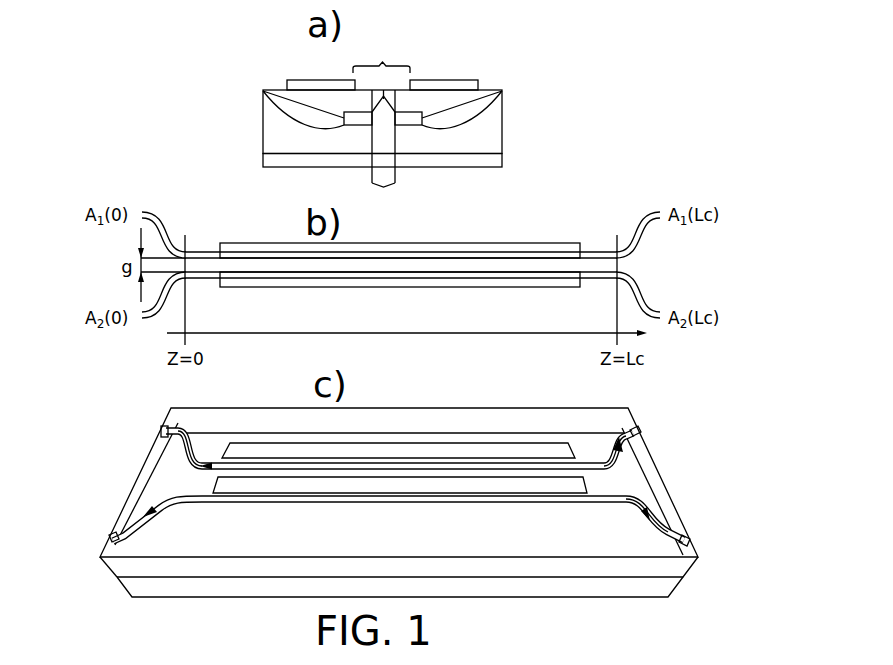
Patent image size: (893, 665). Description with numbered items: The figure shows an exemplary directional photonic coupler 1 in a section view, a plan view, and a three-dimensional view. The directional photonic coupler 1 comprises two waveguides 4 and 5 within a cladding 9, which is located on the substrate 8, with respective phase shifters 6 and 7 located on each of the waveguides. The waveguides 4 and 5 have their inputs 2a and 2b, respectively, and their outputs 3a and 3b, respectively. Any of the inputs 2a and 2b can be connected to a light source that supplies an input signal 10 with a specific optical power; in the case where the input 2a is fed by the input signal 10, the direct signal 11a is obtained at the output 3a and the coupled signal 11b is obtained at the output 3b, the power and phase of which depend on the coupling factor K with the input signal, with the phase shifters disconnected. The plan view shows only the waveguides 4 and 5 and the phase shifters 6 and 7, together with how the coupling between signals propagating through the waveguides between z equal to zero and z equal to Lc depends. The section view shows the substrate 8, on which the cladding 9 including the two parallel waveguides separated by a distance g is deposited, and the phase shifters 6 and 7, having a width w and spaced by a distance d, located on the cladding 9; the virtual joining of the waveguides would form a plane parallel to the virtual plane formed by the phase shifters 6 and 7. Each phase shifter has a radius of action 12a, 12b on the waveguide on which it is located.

The directional photonic coupler 1 is at (420, 335).
The input 2a is at (162, 431).
The input 2b is at (110, 537).
The output 3a is at (640, 432).
The output 3b is at (690, 536).
The waveguide 4 is at (424, 117).
The waveguide 5 is at (343, 118).
The phase shifter 6 is at (468, 85).
The phase shifter 7 is at (288, 80).
The substrate 8 is at (495, 162).
The cladding 9 is at (485, 138).
The input signal 10 is at (192, 450).
The direct signal 11a is at (607, 458).
The coupled signal 11b is at (624, 503).
The radius of action 12a is at (287, 115).
The radius of action 12b is at (478, 115).